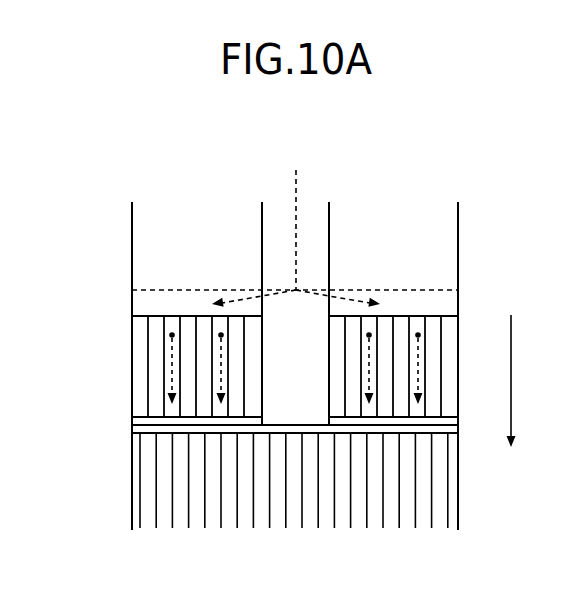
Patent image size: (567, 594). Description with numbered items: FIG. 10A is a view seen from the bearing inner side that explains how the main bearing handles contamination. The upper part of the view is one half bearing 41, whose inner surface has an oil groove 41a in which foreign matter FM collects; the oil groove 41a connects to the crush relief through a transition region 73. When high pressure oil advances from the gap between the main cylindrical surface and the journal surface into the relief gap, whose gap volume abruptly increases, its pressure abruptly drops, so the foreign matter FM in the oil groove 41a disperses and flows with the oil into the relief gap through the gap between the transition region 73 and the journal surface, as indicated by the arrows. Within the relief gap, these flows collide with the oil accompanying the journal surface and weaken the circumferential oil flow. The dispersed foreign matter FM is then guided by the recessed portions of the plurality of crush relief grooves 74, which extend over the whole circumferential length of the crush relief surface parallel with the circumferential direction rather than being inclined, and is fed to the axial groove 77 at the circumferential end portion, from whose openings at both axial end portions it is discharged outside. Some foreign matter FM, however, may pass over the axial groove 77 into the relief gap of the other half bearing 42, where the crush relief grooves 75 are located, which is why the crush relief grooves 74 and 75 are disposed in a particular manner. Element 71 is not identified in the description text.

The half bearing 41 is at (116, 239).
The oil groove 41a is at (272, 245).
The outer wall 71 is at (448, 240).
The transition region 73 is at (448, 305).
The crush relief grooves 74 is at (138, 365).
The axial groove 77 is at (117, 416).
The crush relief grooves 75 is at (148, 472).
The half bearing 42 is at (470, 480).
The foreign matter FM is at (302, 162).